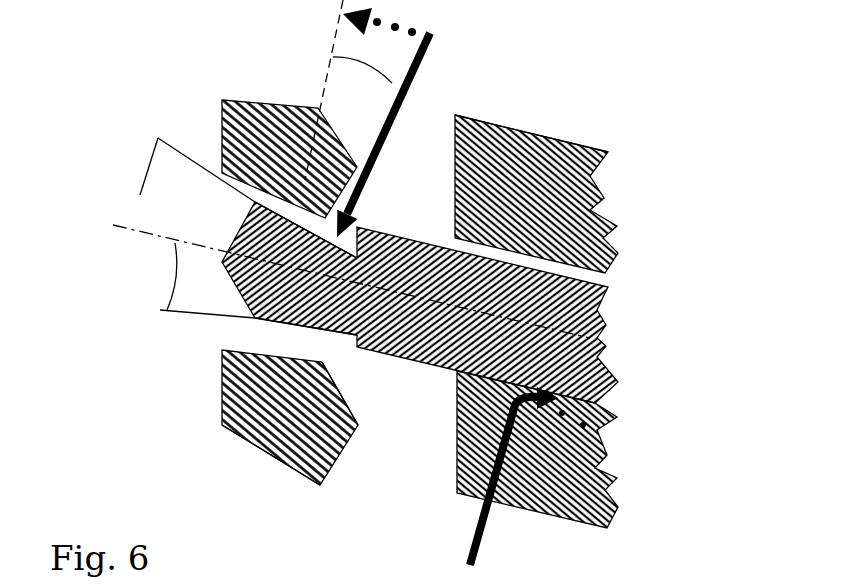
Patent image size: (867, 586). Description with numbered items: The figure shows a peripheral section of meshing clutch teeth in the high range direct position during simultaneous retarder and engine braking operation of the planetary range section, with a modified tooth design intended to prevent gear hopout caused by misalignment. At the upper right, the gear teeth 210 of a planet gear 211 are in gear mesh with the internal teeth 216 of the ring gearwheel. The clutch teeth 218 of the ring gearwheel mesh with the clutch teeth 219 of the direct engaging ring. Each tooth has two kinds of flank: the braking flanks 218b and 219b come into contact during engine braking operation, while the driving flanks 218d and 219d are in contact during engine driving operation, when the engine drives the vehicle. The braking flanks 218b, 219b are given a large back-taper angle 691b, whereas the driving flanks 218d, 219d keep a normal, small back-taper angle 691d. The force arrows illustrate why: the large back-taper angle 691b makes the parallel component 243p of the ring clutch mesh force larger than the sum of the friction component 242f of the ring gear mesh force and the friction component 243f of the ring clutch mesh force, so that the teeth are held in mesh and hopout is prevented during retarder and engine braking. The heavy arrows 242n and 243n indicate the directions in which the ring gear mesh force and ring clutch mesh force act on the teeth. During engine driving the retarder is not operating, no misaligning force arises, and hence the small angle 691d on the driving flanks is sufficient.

The gear teeth 210 is at (560, 210).
The planet gear 211 is at (560, 182).
The internal teeth 216 is at (535, 295).
The clutch teeth 218 is at (258, 316).
The braking flanks 218b is at (281, 302).
The driving flanks 218d is at (288, 329).
The clutch teeth 219 is at (285, 427).
The braking flanks 219b is at (271, 459).
The driving flanks 219d is at (298, 364).
The friction component of the ring gear mesh force 242f is at (598, 431).
The second jet direction 242n is at (485, 542).
The jet nozzle direction 243n is at (414, 77).
The parallel component of the ring clutch mesh force 243p is at (398, 19).
The friction component of the ring clutch mesh force 243f is at (347, 222).
The large back-taper angle 691b is at (360, 56).
The small back-taper angle 691d is at (169, 271).